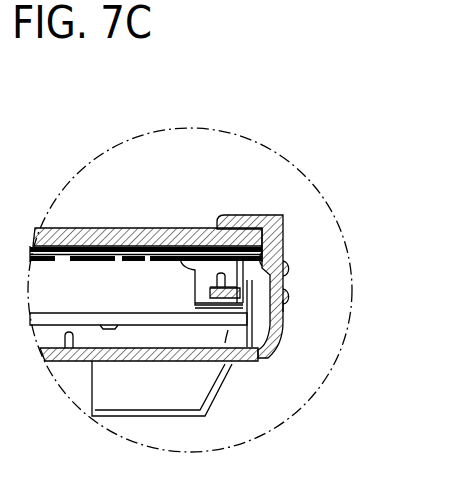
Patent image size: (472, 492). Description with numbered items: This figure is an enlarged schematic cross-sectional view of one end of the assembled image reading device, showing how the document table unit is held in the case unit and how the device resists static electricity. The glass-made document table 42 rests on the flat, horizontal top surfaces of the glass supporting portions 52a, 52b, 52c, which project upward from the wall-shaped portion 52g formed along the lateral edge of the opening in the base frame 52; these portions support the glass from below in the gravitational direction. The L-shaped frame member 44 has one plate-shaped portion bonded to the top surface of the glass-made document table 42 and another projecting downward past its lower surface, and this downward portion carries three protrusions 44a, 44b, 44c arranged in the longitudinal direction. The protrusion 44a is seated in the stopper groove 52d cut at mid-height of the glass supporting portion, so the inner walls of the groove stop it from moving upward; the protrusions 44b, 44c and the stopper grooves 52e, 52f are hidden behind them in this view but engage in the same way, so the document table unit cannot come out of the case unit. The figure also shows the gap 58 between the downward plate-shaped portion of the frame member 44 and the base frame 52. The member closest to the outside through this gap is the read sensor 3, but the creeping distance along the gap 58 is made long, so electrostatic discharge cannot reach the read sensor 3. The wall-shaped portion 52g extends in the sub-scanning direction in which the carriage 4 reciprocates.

The read sensor 3 is at (205, 270).
The carriage 4 is at (143, 285).
The glass-made document table 42 is at (107, 230).
The frame member 44 is at (320, 241).
The protrusion 44a is at (320, 300).
The protrusion 44b is at (320, 300).
The protrusion 44c is at (284, 261).
The base frame 52 is at (229, 279).
The glass supporting portion 52a is at (229, 261).
The glass supporting portion 52b is at (229, 261).
The glass supporting portion 52c is at (229, 261).
The stopper groove 52d is at (229, 310).
The stopper groove 52e is at (229, 310).
The stopper groove 52f is at (229, 310).
The wall-shaped portion 52g is at (284, 297).
The gap 58 is at (284, 308).